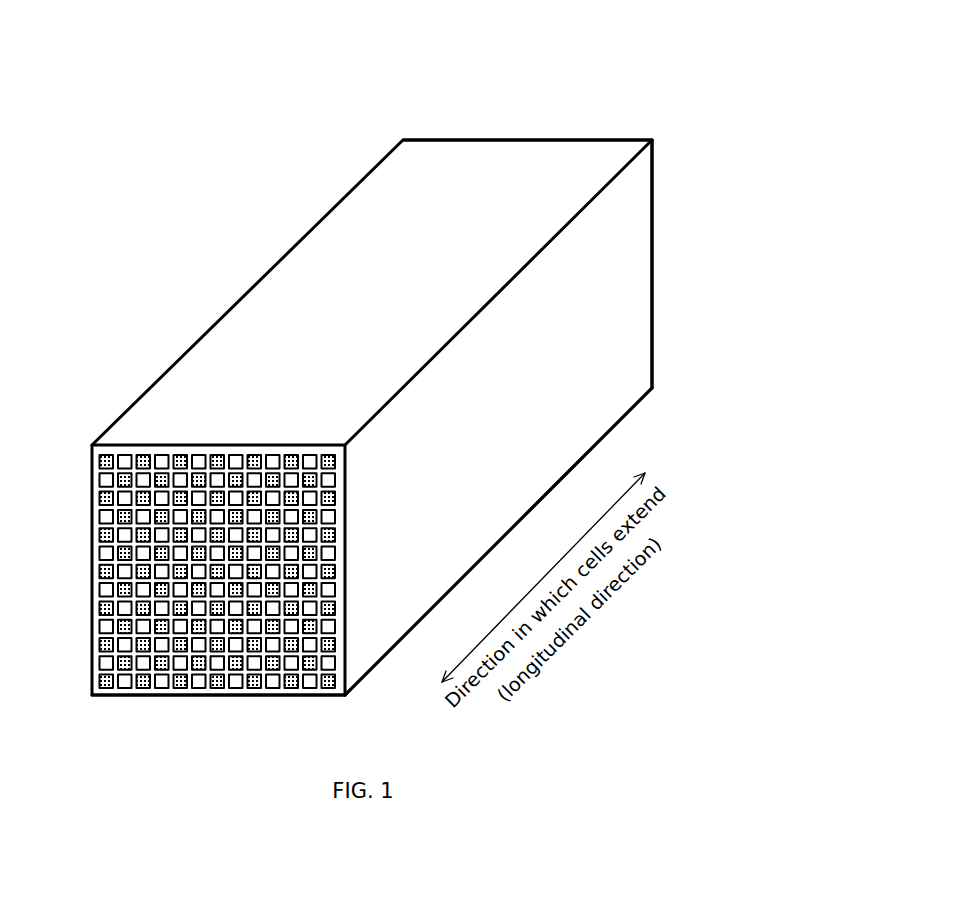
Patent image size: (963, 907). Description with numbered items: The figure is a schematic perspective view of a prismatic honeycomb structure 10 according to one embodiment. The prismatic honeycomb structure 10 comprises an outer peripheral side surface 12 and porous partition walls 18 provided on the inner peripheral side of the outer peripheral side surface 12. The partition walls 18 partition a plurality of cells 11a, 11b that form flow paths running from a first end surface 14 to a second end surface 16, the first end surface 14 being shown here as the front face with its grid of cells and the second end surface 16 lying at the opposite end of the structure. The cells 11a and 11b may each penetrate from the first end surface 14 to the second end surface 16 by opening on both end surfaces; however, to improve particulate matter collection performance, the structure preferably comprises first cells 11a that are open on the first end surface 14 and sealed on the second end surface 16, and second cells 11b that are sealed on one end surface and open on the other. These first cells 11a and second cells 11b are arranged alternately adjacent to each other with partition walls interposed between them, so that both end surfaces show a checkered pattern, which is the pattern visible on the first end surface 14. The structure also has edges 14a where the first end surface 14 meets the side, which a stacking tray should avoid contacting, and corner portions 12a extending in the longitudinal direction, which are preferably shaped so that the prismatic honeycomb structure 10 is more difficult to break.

The prismatic honeycomb structure 10 is at (380, 380).
The first cell 11a is at (100, 571).
The second cell 11b is at (100, 517).
The outer peripheral side surface 12 is at (632, 352).
The corner portion 12a is at (614, 427).
The first end surface 14 is at (184, 598).
The edge 14a is at (213, 697).
The second end surface 16 is at (521, 137).
The partition wall 18 is at (100, 463).